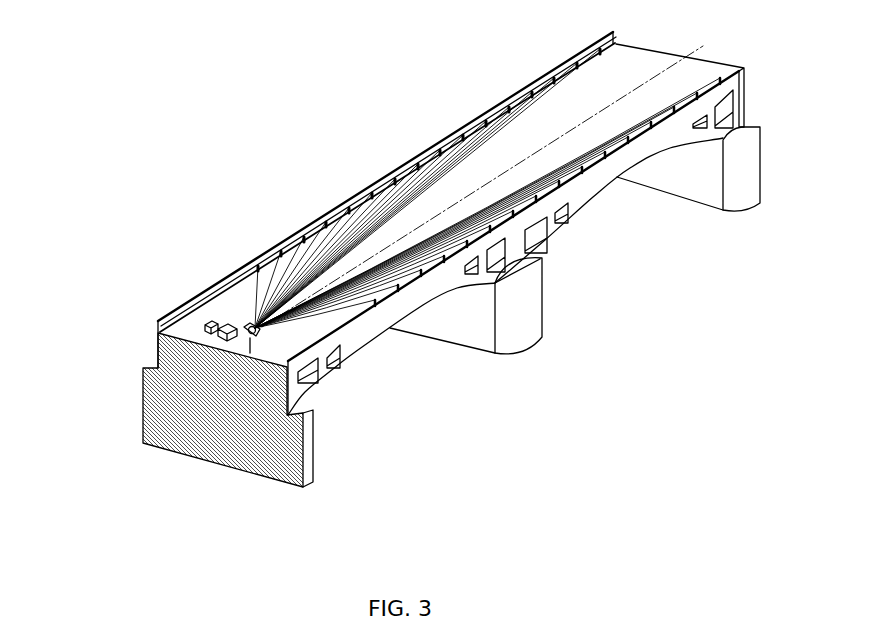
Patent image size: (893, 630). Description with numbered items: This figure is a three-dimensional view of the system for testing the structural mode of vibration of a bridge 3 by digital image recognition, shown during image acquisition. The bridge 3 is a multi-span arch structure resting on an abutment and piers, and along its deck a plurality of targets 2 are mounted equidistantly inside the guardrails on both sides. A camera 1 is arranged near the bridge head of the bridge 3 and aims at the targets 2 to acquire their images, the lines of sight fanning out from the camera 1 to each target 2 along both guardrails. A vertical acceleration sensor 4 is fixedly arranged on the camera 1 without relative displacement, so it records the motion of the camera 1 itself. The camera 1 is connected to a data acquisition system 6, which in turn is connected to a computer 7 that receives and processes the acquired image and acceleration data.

The camera 1 is at (247, 323).
The target 2 is at (297, 235).
The bridge 3 is at (686, 78).
The vertical acceleration sensor 4 is at (258, 338).
The data acquisition system 6 is at (222, 323).
The computer 7 is at (205, 320).